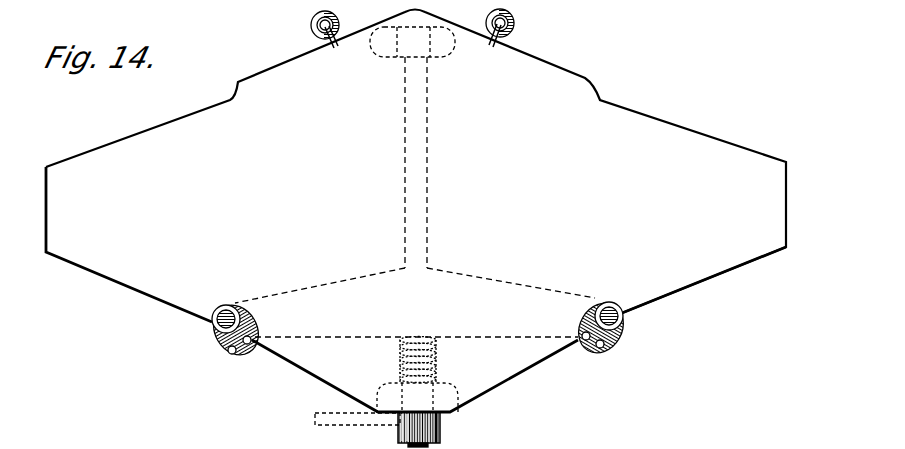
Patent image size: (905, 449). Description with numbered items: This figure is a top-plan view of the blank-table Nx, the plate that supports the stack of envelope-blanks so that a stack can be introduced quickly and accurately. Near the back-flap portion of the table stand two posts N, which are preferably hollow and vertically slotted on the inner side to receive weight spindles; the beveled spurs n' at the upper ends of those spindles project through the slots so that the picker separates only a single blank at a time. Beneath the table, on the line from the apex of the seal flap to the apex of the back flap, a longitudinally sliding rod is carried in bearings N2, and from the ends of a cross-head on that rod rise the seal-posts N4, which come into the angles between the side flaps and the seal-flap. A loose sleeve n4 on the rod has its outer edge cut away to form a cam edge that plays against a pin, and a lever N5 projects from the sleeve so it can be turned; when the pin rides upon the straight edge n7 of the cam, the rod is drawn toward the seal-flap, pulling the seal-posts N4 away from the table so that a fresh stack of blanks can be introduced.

The posts N is at (311, 30).
The spurs n' is at (392, 52).
The blank-table Nx is at (416, 211).
The posts N4 is at (640, 330).
The lever N5 is at (315, 421).
The loose sleeve n4 is at (433, 426).
The bearings N2 is at (433, 446).
The straight edge n7 is at (400, 444).